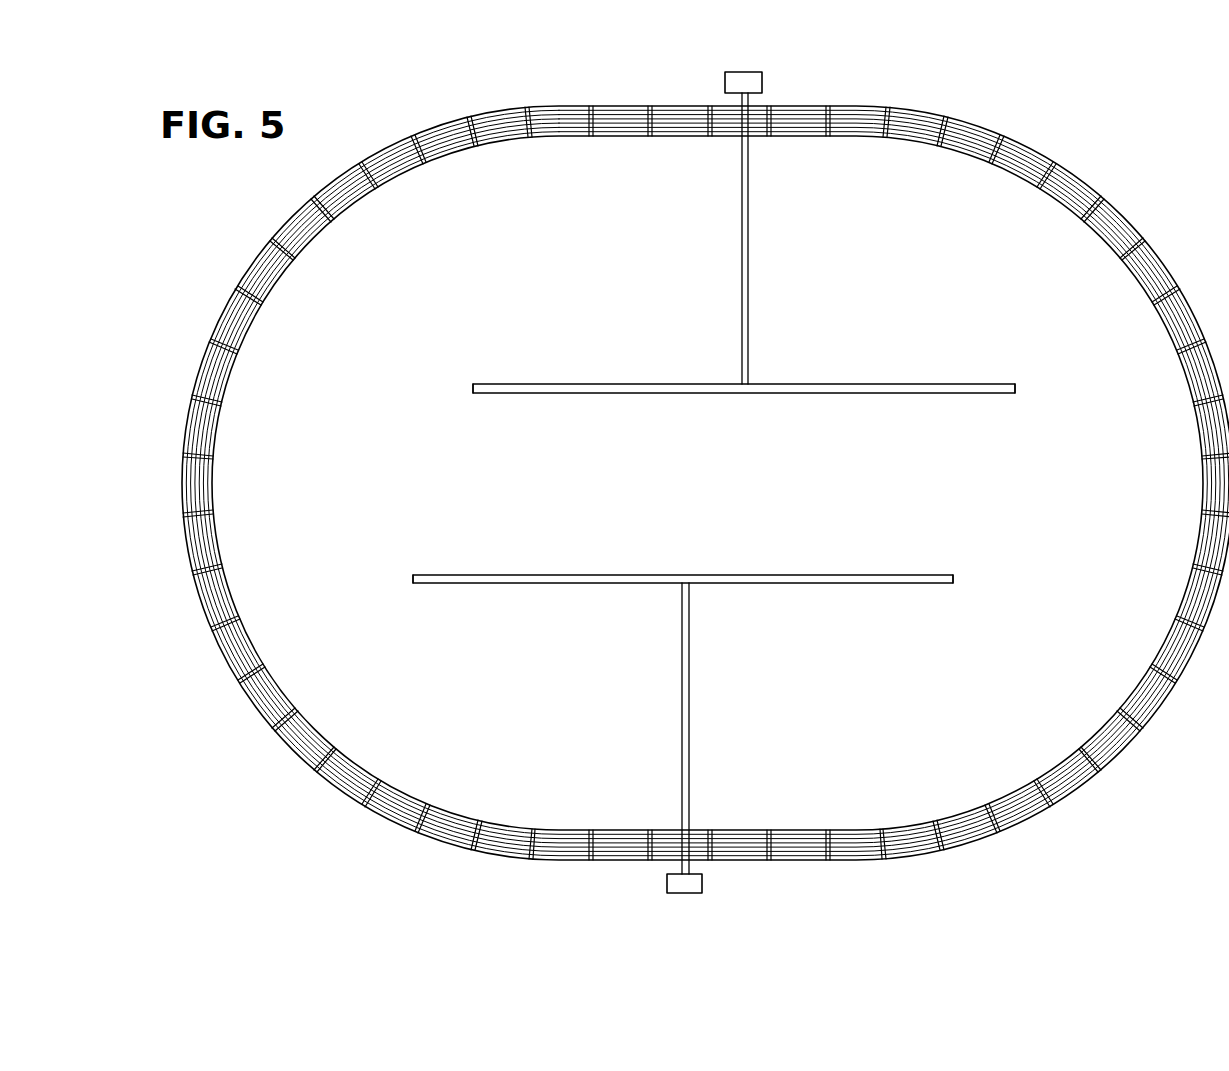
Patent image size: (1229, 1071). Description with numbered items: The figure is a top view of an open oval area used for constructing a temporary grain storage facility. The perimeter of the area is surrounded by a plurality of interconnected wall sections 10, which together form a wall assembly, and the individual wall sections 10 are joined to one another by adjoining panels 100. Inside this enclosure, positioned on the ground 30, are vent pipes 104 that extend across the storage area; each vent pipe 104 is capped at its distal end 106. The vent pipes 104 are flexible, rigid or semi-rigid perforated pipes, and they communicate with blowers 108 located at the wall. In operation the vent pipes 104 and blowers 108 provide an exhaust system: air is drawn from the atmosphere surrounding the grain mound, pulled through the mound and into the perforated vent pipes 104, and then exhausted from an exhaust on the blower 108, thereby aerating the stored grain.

The wall section 10 is at (1077, 782).
The adjoining panel 100 is at (1051, 800).
The vent pipe 104 is at (862, 578).
The distal end 106 is at (470, 385).
The blower 108 is at (764, 78).
The ground 30 is at (768, 486).